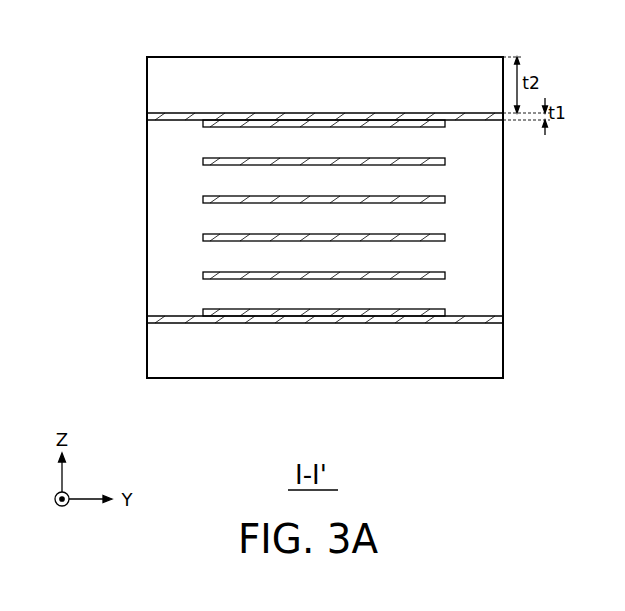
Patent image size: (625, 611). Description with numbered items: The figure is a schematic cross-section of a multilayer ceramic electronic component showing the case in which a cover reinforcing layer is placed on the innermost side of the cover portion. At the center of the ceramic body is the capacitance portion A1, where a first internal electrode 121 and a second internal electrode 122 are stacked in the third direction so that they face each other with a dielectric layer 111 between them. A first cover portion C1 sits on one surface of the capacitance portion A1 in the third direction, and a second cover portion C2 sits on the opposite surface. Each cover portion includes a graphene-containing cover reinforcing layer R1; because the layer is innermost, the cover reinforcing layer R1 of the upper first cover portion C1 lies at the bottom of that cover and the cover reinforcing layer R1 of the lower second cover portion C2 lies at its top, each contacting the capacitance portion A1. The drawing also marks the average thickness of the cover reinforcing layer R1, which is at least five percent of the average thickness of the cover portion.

The dielectric layer 111 is at (300, 140).
The first internal electrode 121 is at (252, 124).
The second internal electrode 122 is at (353, 162).
The cover reinforcing layer R1 is at (181, 116).
The first cover portion C1 is at (143, 57).
The capacitance portion A1 is at (143, 120).
The second cover portion C2 is at (143, 318).